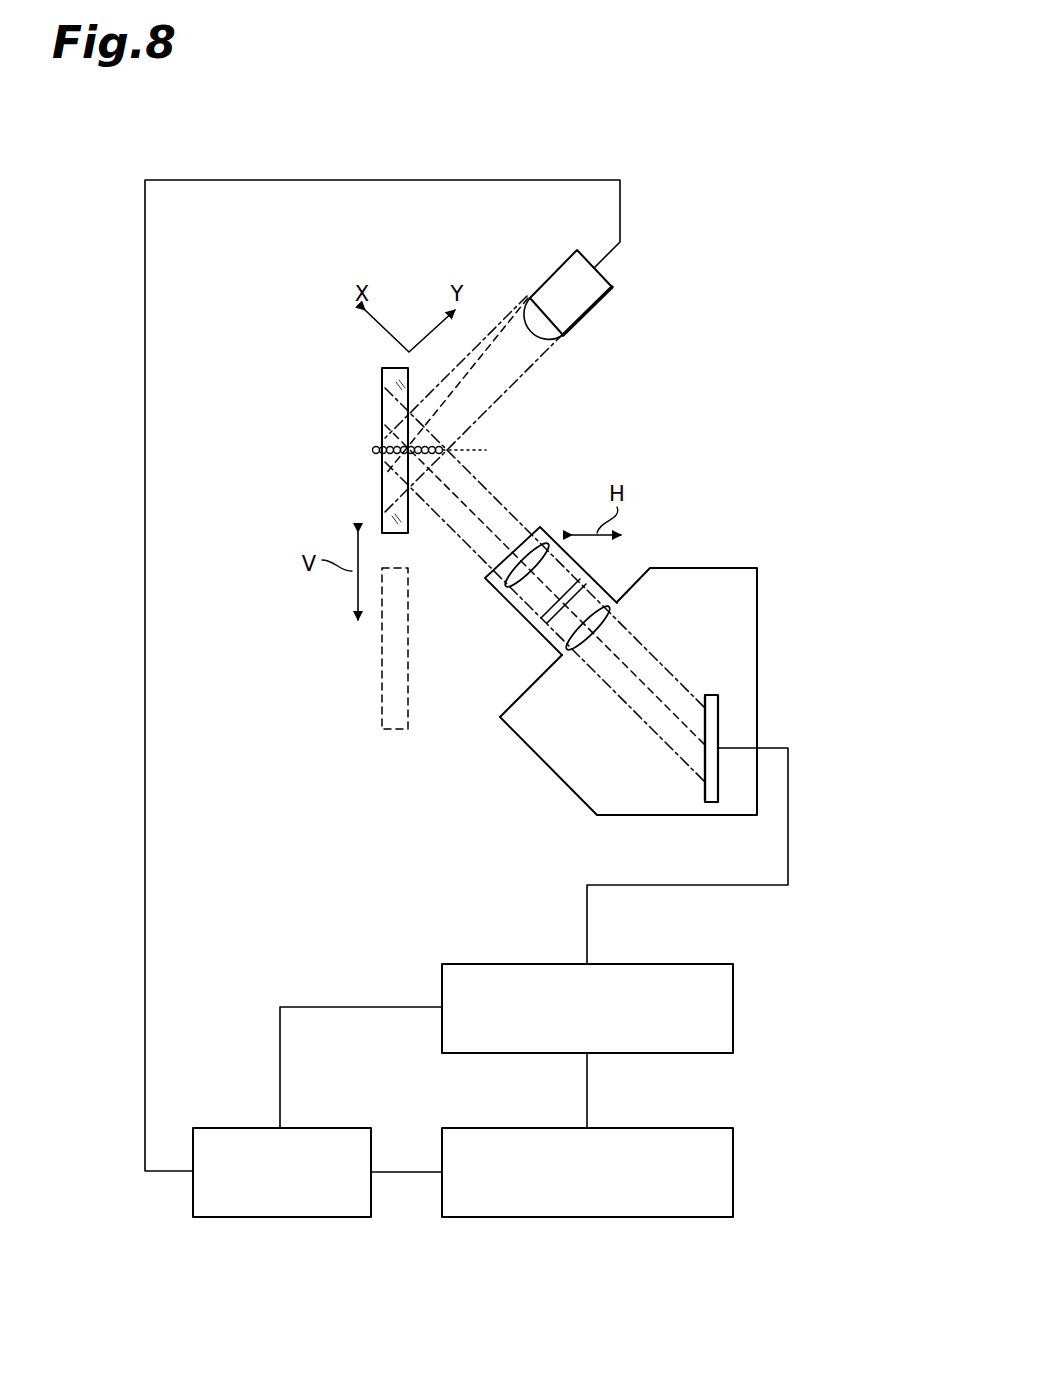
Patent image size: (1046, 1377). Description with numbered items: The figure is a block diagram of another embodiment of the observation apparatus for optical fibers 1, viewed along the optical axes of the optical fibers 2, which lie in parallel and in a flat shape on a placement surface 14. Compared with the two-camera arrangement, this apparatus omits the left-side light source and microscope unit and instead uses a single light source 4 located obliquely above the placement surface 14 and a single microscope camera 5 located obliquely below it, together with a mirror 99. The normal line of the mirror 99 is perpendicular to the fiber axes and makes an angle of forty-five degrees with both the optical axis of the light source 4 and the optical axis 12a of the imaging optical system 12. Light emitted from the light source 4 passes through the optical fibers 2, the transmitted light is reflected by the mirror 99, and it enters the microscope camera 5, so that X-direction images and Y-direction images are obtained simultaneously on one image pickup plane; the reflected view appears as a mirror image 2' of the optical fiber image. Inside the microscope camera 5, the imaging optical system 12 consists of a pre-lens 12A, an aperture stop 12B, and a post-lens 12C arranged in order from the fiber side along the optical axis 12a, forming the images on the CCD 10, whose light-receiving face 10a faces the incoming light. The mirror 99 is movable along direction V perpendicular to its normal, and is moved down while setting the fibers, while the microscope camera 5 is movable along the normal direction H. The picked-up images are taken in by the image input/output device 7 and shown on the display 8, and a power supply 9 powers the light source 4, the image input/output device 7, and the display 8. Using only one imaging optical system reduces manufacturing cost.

The observation apparatus for optical fibers 1 is at (737, 322).
The optical fibers 2 is at (474, 404).
The mirror image of the optical fiber image 2' is at (507, 585).
The light source 4 is at (607, 279).
The microscope camera 5 is at (757, 568).
The image input/output device 7 is at (735, 1012).
The display 8 is at (735, 1173).
The power supply 9 is at (350, 1128).
The CCD 10 is at (718, 705).
The light receiving surface of image sensor 10a is at (706, 792).
The imaging optical system 12 is at (523, 596).
The pre-lens 12A is at (518, 582).
The aperture stop 12B is at (546, 604).
The post-lens 12C is at (549, 631).
The optical axis 12a is at (462, 497).
The placement surface 14 is at (372, 451).
The mirror 99 is at (382, 497).